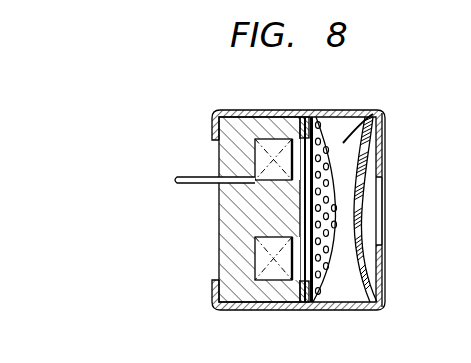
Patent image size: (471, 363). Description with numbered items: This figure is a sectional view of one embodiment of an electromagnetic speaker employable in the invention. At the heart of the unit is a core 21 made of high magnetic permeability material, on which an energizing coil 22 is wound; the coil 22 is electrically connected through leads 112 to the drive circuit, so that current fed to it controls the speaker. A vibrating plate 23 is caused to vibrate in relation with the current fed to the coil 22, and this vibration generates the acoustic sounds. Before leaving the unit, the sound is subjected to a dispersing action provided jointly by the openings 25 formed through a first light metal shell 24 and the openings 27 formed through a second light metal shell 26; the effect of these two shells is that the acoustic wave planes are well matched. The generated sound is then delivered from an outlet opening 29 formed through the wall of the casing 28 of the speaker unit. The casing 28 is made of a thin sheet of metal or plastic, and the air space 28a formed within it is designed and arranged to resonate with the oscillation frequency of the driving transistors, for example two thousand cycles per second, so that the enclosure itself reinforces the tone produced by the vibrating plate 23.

The core 21 is at (238, 236).
The energizing coil 22 is at (255, 262).
The vibrating plate 23 is at (283, 207).
The light metal shell 24 is at (333, 263).
The openings 25 is at (322, 143).
The light metal shell 26 is at (361, 192).
The openings 27 is at (358, 212).
The casing 28 is at (385, 127).
The air space 28a is at (373, 114).
The outlet opening 29 is at (383, 234).
The leads 112 is at (189, 176).